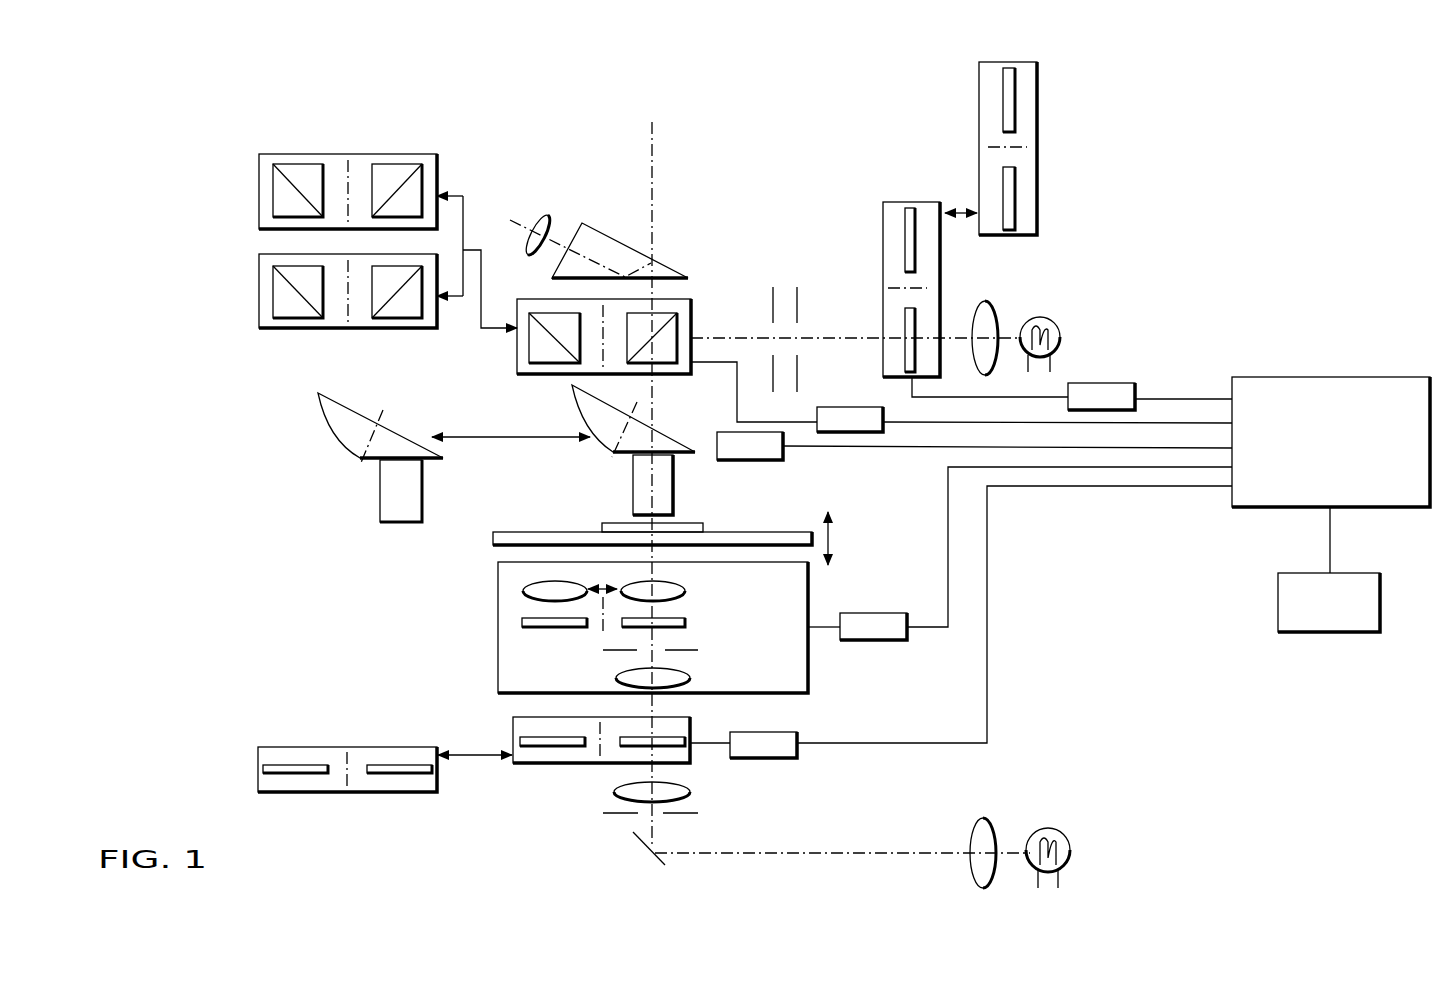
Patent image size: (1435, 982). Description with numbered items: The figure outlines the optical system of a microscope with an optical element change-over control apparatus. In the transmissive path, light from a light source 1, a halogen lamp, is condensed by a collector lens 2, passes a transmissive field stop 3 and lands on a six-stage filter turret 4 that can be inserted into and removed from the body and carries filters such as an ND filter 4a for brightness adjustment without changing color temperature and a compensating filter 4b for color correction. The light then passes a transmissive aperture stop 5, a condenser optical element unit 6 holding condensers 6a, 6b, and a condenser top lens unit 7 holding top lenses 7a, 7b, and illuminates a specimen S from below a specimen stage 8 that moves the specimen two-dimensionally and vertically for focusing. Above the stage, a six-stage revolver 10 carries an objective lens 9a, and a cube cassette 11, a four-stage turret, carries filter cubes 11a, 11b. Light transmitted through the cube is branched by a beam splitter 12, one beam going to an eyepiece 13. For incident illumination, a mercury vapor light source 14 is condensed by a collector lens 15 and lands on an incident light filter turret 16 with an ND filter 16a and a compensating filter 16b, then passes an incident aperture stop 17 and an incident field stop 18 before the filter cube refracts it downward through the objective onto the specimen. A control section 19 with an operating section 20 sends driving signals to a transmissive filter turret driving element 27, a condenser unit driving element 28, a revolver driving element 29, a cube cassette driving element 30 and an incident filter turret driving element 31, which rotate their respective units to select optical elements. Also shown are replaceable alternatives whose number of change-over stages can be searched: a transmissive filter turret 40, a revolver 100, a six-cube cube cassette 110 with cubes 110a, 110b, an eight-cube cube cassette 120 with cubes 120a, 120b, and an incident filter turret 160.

The light source for transmissive illumination 1 is at (1055, 827).
The collector lens 2 is at (993, 827).
The transmissive field stop 3 is at (688, 815).
The filter turret for transmission 4 is at (693, 758).
The ND filter 4a is at (673, 733).
The compensating filter 4b is at (552, 748).
The transmissive aperture stop 5 is at (703, 652).
The condenser optical element unit 6 is at (687, 625).
The condenser 6a is at (522, 622).
The condenser 6b is at (643, 628).
The condenser top lens unit 7 is at (687, 592).
The condenser top lens 7a is at (640, 582).
The condenser top lens 7b is at (522, 593).
The specimen stage 8 is at (775, 532).
The specimen S is at (612, 522).
The objective lens 9a is at (633, 482).
The revolver 10 is at (590, 423).
The cube cassette 11 is at (517, 367).
The filter cube 11a is at (665, 318).
The filter cube 11b is at (540, 313).
The beam splitter 12 is at (670, 263).
The eyepiece 13 is at (543, 216).
The light source for incident illumination 14 is at (1053, 315).
The collector lens 15 is at (988, 302).
The incident light filter turret 16 is at (907, 200).
The ND filter 16a is at (905, 323).
The compensating filter 16b is at (905, 235).
The incident aperture stop 17 is at (800, 298).
The incident field stop 18 is at (775, 285).
The control section 19 is at (1378, 376).
The operating section 20 is at (1372, 573).
The transmissive filter turret driving element 27 is at (800, 749).
The condenser unit driving element 28 is at (882, 612).
The revolver driving element 29 is at (783, 458).
The cube cassette driving element 30 is at (840, 403).
The incident filter turret driving element 31 is at (1102, 382).
The transmissive filter turret 40 is at (440, 779).
The revolver 100 is at (333, 420).
The cube cassette 110 is at (259, 298).
The cube 110a is at (297, 318).
The cube 110b is at (398, 318).
The cube cassette 120 is at (259, 205).
The cube 120a is at (297, 163).
The cube 120b is at (408, 163).
The incident filter turret 160 is at (1038, 82).